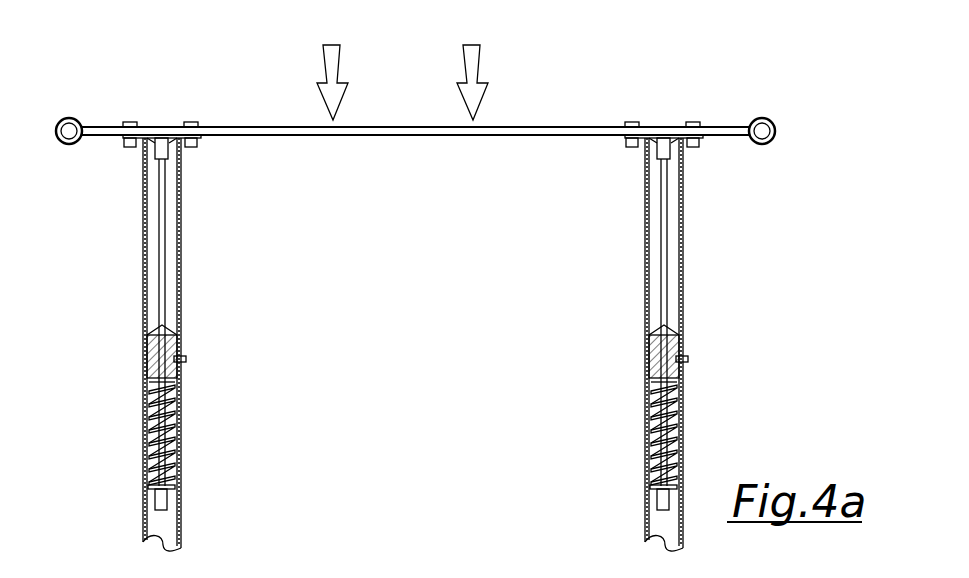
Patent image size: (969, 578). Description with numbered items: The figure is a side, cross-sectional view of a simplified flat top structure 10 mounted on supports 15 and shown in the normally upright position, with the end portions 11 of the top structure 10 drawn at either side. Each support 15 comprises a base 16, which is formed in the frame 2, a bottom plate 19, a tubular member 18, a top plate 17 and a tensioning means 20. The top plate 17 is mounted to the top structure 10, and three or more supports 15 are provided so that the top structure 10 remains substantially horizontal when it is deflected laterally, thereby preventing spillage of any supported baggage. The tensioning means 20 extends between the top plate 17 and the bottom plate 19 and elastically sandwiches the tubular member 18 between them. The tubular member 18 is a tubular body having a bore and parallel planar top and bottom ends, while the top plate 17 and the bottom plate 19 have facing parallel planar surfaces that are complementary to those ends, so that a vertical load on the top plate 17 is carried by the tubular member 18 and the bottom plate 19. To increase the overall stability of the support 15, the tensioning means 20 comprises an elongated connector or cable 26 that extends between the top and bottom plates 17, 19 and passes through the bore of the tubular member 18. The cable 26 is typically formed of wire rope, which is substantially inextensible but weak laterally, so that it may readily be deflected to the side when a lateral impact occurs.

The frame 2 is at (647, 510).
The top structure 10 is at (793, 132).
The end ring 11 is at (72, 118).
The support 15 is at (593, 382).
The base 16 is at (183, 513).
The top plate 17 is at (200, 140).
The tubular member 18 is at (182, 273).
The bottom plate 19 is at (182, 323).
The tensioning means 20 is at (130, 497).
The cable 26 is at (182, 235).